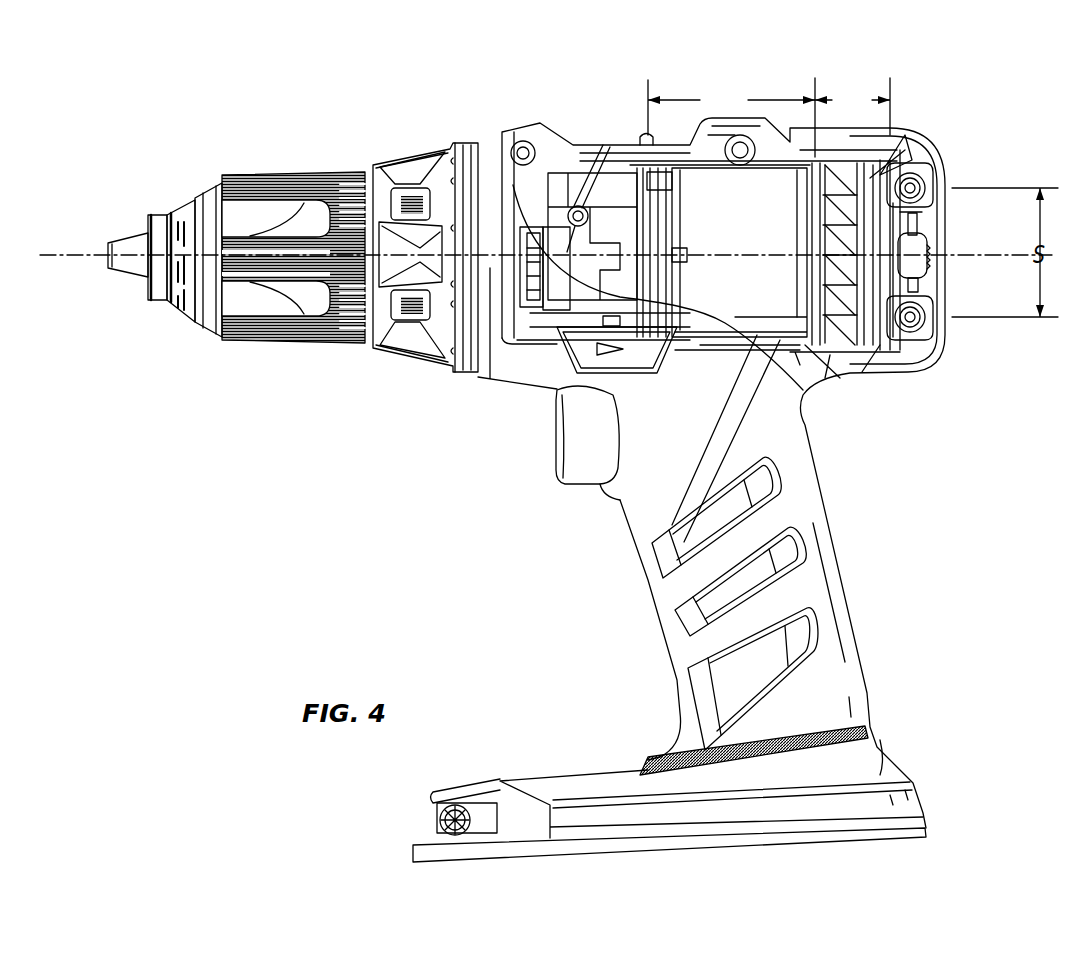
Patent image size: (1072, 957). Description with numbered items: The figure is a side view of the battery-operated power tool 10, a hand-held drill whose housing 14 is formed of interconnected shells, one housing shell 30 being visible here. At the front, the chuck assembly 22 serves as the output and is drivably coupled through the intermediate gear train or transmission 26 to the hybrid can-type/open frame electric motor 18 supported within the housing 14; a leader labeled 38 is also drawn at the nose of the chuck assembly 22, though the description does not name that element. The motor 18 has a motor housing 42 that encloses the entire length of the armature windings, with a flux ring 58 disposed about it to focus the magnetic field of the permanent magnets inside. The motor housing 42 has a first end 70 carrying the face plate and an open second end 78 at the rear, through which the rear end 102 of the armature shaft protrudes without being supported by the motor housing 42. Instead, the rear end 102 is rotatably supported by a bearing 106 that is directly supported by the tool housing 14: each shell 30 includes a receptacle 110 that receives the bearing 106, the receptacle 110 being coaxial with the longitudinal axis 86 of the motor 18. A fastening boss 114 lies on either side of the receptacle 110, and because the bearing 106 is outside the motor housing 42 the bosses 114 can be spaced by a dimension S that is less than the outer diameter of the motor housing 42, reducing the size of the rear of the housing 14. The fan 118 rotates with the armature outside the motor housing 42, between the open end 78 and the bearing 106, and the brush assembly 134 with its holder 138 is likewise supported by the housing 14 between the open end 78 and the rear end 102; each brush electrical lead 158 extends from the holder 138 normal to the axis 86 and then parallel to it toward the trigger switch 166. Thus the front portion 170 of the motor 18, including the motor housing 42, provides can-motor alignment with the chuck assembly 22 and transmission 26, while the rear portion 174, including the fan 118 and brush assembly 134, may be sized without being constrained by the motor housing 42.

The power tool 10 is at (990, 86).
The housing 14 is at (832, 514).
The electric motor 18 is at (805, 360).
The chuck assembly 22 is at (172, 346).
The transmission 26 is at (415, 386).
The housing shell 30 is at (815, 587).
The axis 38 is at (64, 262).
The motor housing 42 is at (787, 282).
The flux ring 58 is at (737, 307).
The first end 70 is at (585, 155).
The open second end 78 is at (828, 330).
The longitudinal axis 86 is at (723, 252).
The rear end 102 is at (920, 268).
The bearing 106 is at (917, 284).
The receptacle 110 is at (924, 230).
The fastening boss 114 is at (918, 170).
The fan 118 is at (858, 345).
The brush assembly 134 is at (890, 152).
The holder 138 is at (905, 165).
The electrical lead 158 is at (860, 345).
The trigger switch 166 is at (580, 470).
The front portion 170 is at (731, 117).
The rear portion 174 is at (852, 106).